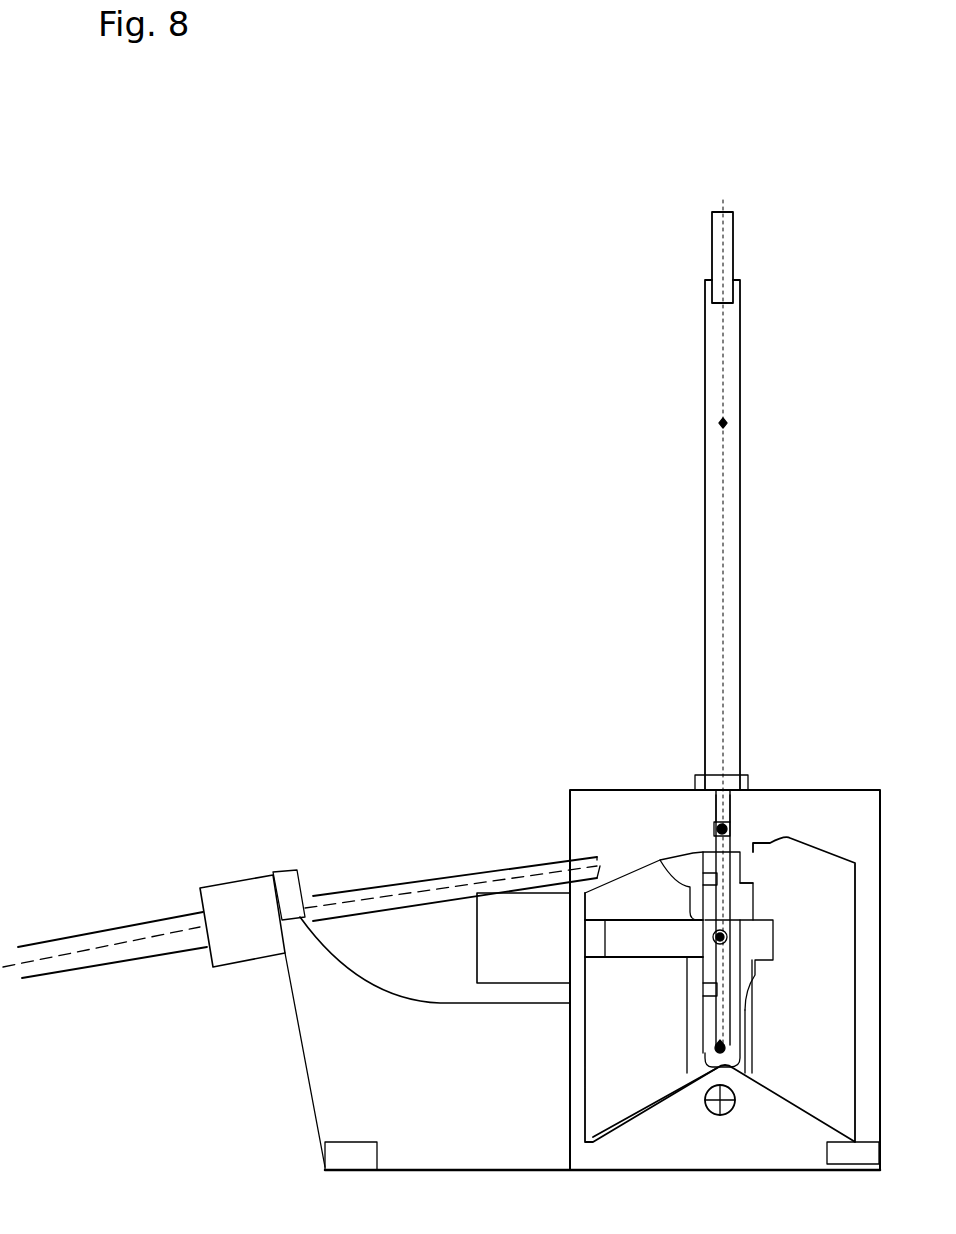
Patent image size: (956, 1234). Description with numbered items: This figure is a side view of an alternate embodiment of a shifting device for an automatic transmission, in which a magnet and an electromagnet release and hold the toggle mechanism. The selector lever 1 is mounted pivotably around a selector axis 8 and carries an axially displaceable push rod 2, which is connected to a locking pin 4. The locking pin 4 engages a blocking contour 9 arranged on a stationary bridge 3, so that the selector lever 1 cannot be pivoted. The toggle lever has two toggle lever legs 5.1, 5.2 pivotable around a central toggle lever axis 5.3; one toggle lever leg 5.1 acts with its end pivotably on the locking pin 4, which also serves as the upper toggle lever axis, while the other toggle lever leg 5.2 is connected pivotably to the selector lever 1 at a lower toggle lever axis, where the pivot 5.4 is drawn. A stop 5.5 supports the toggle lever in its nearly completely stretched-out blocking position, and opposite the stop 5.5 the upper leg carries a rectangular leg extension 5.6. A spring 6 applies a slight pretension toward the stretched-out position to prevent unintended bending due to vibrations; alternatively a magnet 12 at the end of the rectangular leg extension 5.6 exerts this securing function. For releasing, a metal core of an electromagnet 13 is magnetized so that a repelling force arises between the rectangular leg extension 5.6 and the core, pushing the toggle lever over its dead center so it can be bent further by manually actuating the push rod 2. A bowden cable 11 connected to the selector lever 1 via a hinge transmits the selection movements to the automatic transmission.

The selector lever 1 is at (705, 370).
The push rod 2 is at (733, 217).
The stationary bridge 3 is at (805, 800).
The locking pin 4 is at (718, 820).
The toggle lever leg 5.1 is at (705, 862).
The toggle lever leg 5.2 is at (733, 1017).
The central toggle lever axis 5.3 is at (728, 935).
The lower pivot pin 5.4 is at (714, 1048).
The stop 5.5 is at (757, 900).
The rectangular leg extension 5.6 is at (685, 950).
The spring 6 is at (705, 982).
The selector axis 8 is at (723, 1115).
The blocking contour 9 is at (730, 830).
The bowden cable 11 is at (447, 870).
The magnet 12 is at (598, 942).
The electromagnet 13 is at (532, 938).